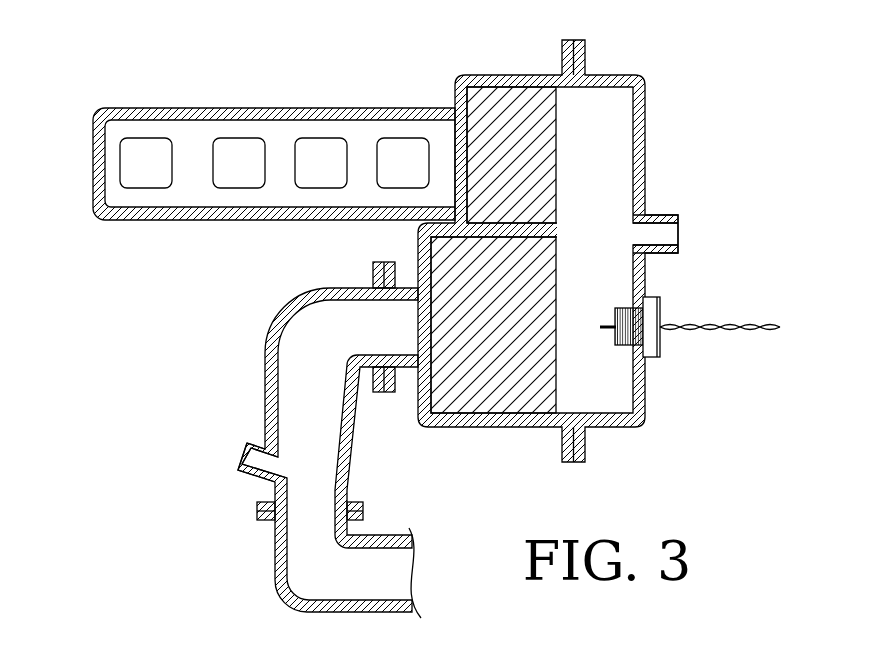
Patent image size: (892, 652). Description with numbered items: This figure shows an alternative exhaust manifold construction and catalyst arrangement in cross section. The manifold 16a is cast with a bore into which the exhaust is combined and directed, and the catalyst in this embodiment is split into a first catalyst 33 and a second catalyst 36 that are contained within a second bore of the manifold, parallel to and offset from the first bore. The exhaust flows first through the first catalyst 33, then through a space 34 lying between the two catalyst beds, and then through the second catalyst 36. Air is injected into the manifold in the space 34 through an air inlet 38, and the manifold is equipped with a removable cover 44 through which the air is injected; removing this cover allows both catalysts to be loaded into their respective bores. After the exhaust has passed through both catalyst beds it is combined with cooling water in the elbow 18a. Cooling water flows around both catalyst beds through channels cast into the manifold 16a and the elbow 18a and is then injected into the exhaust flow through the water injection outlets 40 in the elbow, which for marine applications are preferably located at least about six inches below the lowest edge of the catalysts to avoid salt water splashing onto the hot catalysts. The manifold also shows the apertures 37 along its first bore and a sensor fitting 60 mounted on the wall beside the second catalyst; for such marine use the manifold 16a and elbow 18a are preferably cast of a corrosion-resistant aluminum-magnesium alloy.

The manifold 16a is at (197, 108).
The apertures 37 is at (402, 138).
The first catalyst 33 is at (508, 113).
The removable cover 44 is at (645, 125).
The space 34 is at (610, 184).
The air inlet 38 is at (663, 215).
The sensor 60 is at (609, 318).
The second catalyst 36 is at (488, 375).
The elbow 18a is at (282, 325).
The water injection outlets 40 is at (258, 443).